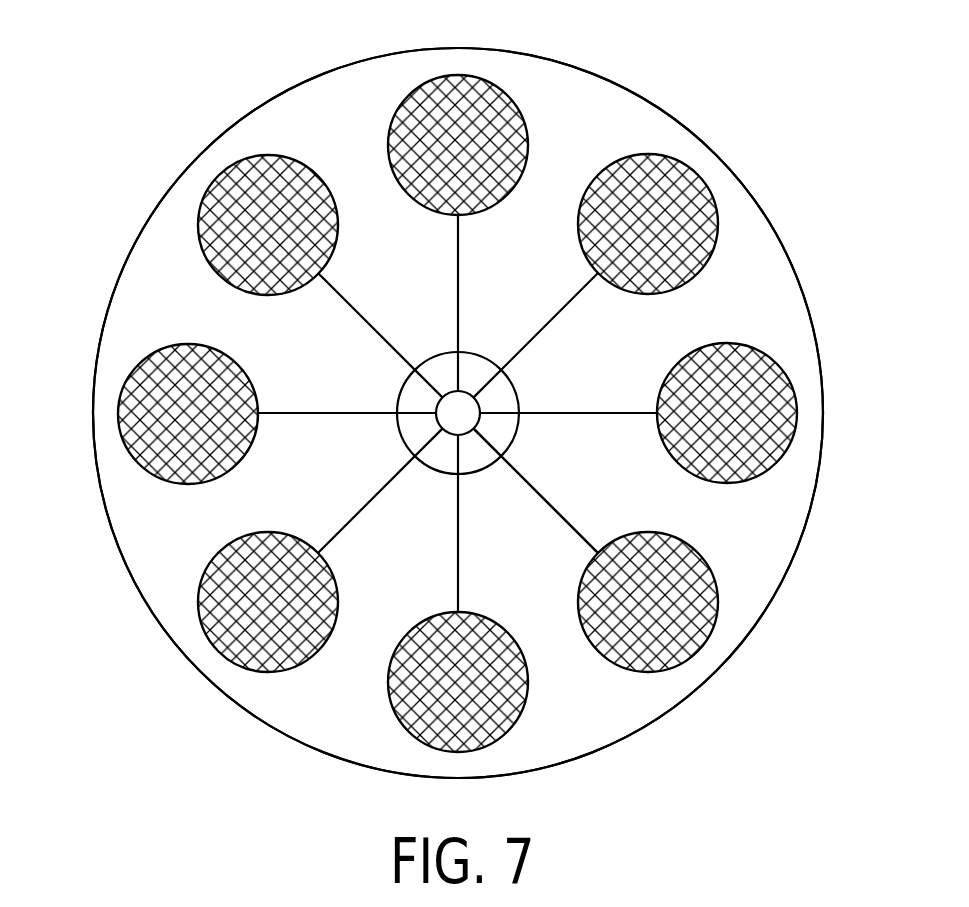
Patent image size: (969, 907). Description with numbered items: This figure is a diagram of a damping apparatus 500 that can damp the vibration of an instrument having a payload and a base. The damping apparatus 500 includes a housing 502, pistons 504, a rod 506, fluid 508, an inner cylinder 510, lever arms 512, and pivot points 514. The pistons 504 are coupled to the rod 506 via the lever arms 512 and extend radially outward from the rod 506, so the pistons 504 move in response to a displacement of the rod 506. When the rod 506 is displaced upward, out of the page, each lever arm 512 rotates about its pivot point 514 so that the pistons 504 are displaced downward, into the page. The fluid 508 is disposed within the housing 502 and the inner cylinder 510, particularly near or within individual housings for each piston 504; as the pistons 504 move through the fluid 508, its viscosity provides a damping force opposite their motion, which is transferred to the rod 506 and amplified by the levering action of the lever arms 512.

The damping apparatus 500 is at (431, 389).
The housing 502 is at (280, 93).
The pistons 504 is at (482, 82).
The rod 506 is at (437, 408).
The fluid 508 is at (157, 552).
The inner cylinder 510 is at (517, 388).
The lever arms 512 is at (568, 518).
The pivot points 514 is at (503, 457).